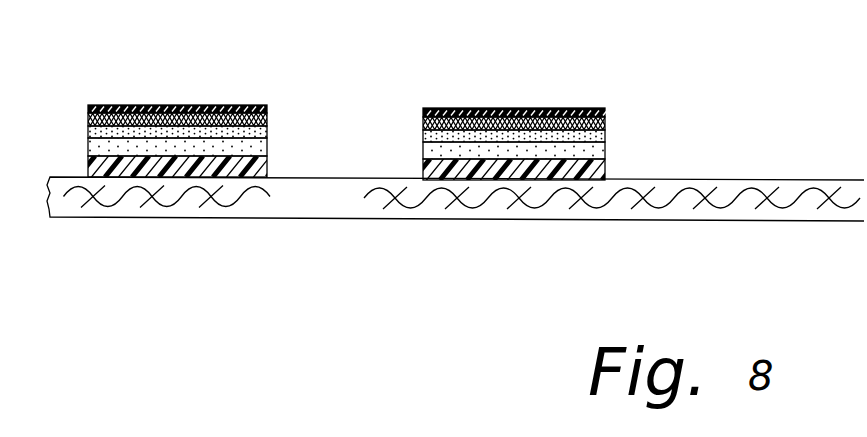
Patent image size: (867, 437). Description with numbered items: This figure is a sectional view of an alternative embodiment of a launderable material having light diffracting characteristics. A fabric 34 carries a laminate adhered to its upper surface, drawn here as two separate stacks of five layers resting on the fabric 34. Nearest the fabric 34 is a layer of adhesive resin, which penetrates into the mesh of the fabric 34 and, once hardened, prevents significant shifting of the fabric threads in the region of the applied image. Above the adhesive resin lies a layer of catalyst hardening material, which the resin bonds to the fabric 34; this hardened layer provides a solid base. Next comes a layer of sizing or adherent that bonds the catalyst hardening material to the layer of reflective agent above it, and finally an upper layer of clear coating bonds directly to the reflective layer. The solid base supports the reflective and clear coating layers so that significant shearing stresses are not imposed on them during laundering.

The fabric 34 is at (493, 220).